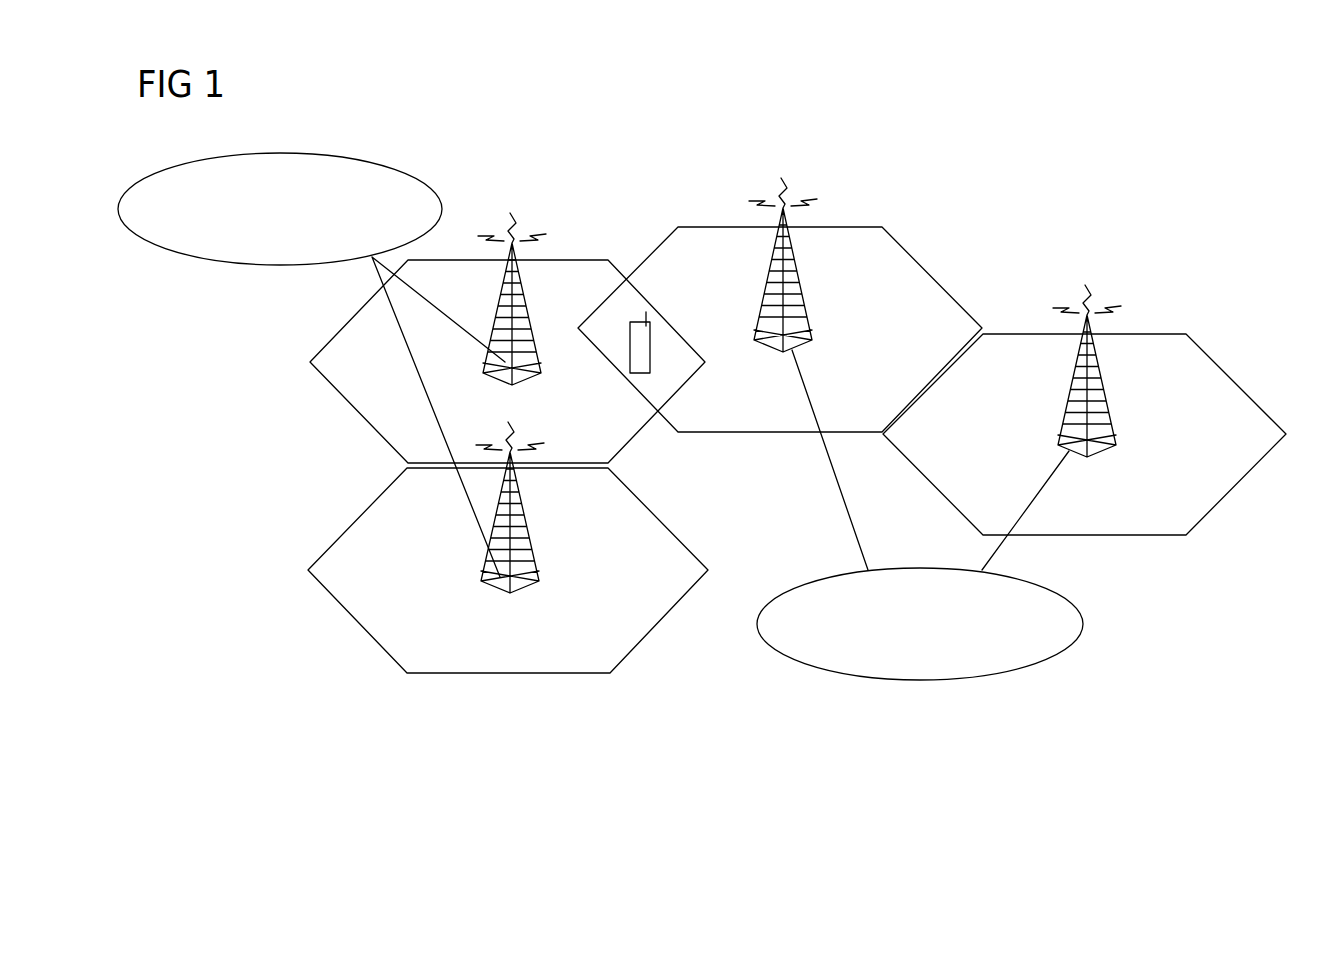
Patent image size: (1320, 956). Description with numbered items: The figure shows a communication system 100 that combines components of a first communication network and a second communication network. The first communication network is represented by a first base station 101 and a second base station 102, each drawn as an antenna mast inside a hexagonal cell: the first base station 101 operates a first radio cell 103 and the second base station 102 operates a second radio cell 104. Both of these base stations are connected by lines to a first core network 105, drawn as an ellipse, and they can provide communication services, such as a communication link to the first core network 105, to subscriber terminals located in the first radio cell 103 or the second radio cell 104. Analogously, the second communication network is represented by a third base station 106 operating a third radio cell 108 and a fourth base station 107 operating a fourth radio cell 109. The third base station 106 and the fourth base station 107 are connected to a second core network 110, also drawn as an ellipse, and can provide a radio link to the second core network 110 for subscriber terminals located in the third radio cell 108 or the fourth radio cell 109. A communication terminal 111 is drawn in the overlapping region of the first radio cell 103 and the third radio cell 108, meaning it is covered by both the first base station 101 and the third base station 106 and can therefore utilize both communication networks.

The communication system 100 is at (1095, 155).
The first base station 101 is at (530, 327).
The second base station 102 is at (537, 542).
The first radio cell 103 is at (568, 260).
The second radio cell 104 is at (687, 537).
The first core network 105 is at (380, 165).
The third base station 106 is at (803, 302).
The fourth base station 107 is at (1106, 401).
The third radio cell 108 is at (912, 260).
The fourth radio cell 109 is at (1171, 330).
The second core network 110 is at (1082, 615).
The communication terminal 111 is at (650, 332).